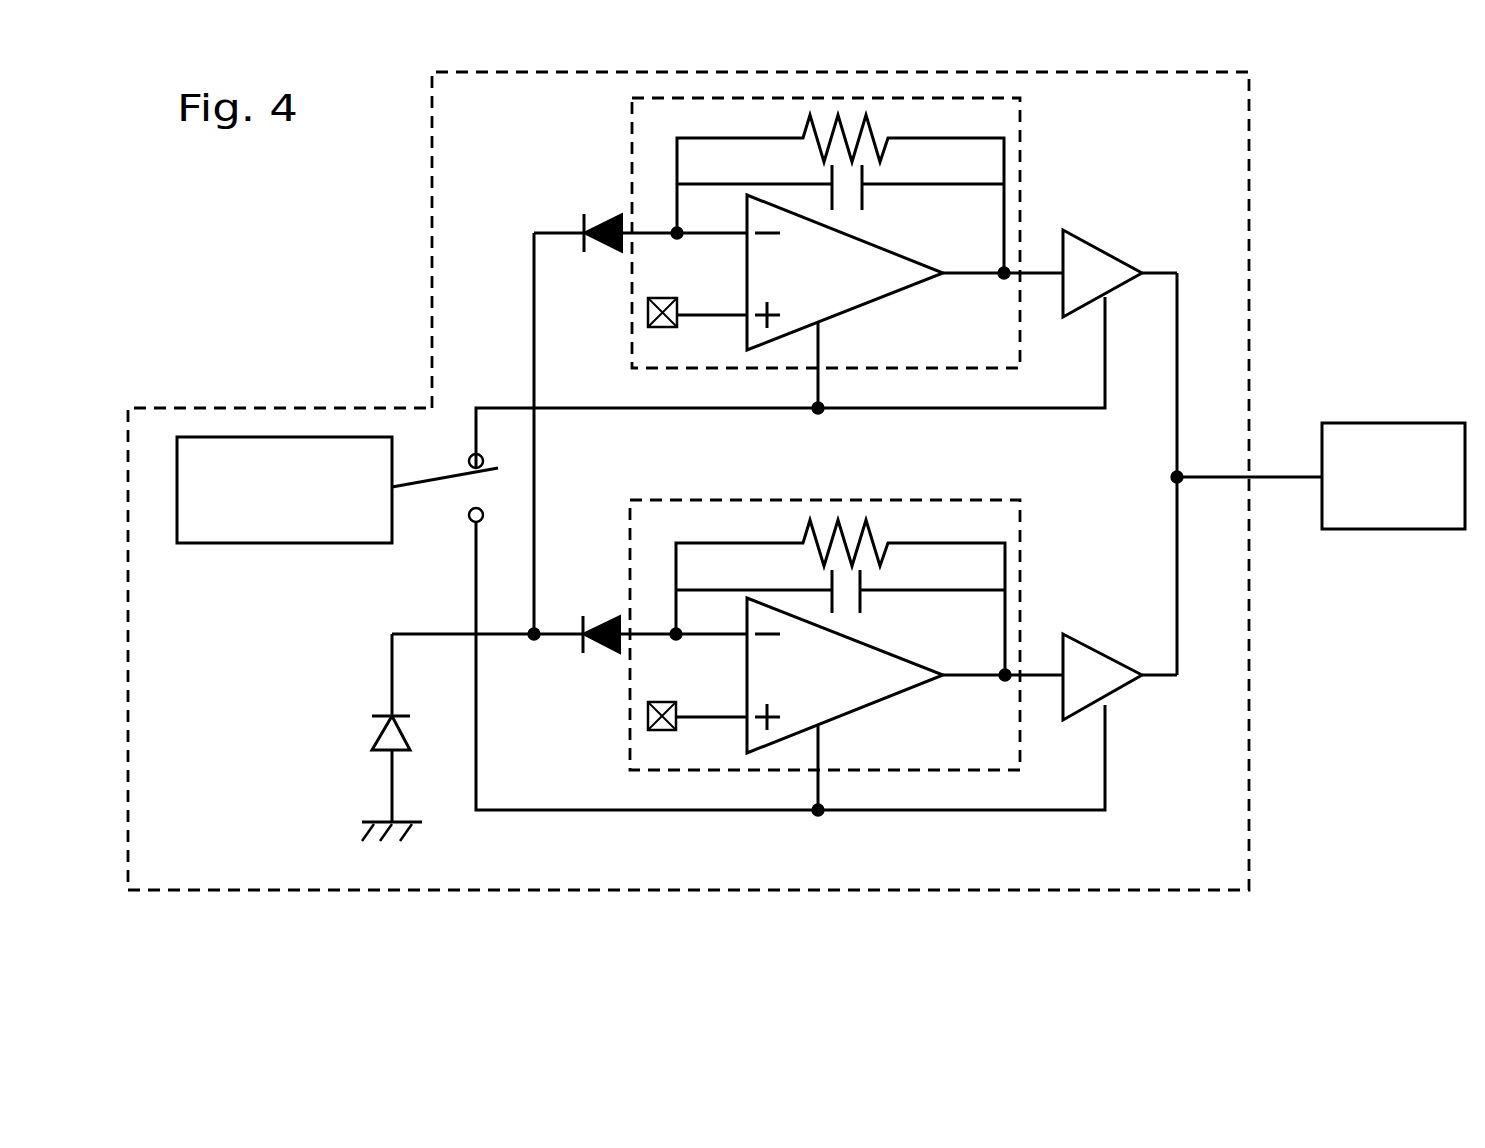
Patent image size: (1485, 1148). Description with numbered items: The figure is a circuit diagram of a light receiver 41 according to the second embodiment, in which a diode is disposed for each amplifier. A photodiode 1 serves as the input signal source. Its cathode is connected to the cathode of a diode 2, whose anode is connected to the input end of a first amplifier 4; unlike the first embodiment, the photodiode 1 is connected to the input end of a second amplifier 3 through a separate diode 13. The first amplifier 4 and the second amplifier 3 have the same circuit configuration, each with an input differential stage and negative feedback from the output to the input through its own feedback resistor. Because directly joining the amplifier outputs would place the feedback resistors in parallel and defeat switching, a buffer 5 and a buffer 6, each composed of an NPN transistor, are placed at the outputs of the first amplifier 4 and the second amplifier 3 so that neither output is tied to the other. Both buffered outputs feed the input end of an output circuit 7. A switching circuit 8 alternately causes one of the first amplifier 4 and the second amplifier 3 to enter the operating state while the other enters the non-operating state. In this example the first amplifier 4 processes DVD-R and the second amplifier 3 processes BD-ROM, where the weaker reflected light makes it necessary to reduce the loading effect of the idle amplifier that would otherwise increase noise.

The photodiode 1 is at (385, 716).
The diode 2 is at (580, 226).
The second amplifier 3 is at (877, 497).
The first amplifier 4 is at (1022, 105).
The buffer 5 is at (1070, 236).
The buffer 6 is at (1072, 643).
The output circuit 7 is at (1396, 423).
The switching circuit 8 is at (245, 540).
The diode 13 is at (600, 620).
The light receiver 41 is at (738, 892).